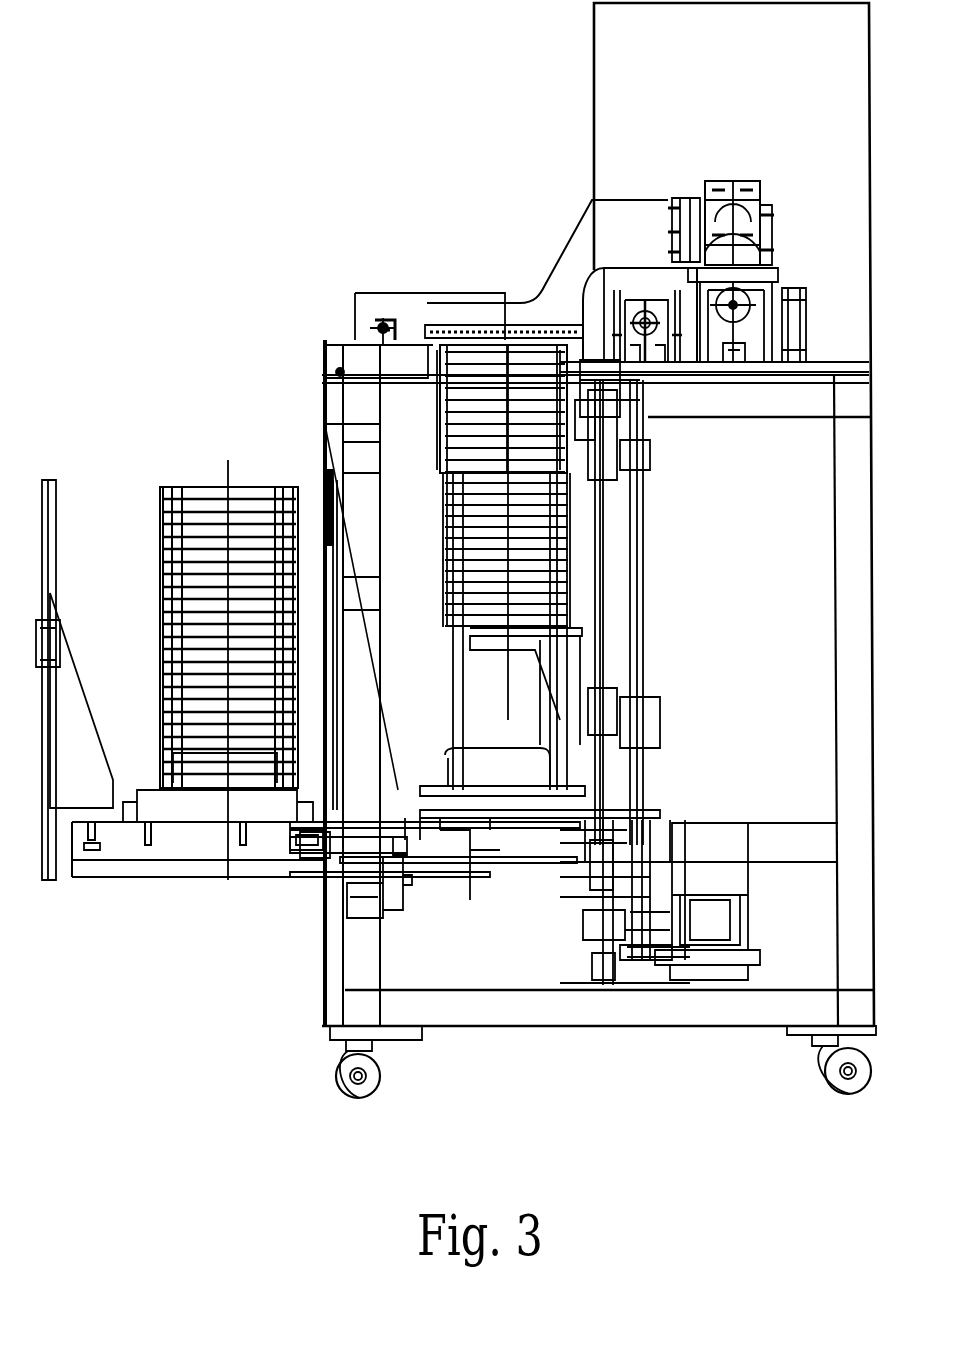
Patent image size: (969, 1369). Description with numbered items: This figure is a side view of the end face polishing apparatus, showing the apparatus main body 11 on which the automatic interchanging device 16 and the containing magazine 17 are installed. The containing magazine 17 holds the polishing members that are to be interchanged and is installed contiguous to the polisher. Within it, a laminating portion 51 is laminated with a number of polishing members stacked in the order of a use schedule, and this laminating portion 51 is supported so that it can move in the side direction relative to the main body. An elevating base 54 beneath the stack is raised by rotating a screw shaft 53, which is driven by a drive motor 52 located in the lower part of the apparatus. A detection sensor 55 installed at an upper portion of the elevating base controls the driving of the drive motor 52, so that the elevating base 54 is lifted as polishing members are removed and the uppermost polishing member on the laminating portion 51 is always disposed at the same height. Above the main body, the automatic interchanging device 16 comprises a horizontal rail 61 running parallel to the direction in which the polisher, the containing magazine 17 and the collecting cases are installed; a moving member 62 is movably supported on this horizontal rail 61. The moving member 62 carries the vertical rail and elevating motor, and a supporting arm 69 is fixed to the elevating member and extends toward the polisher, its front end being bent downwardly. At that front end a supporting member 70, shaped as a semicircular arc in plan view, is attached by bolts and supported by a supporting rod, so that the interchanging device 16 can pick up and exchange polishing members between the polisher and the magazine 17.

The apparatus main body 11 is at (848, 463).
The automatic interchanging device 16 is at (634, 205).
The containing magazine 17 is at (418, 532).
The laminating portion 51 is at (203, 790).
The drive motor 52 is at (713, 847).
The screw shaft 53 is at (607, 517).
The elevating base 54 is at (540, 815).
The detection sensor 55 is at (383, 328).
The horizontal rail 61 is at (673, 240).
The moving member 62 is at (703, 195).
The supporting arm 69 is at (560, 283).
The supporting member 70 is at (433, 338).